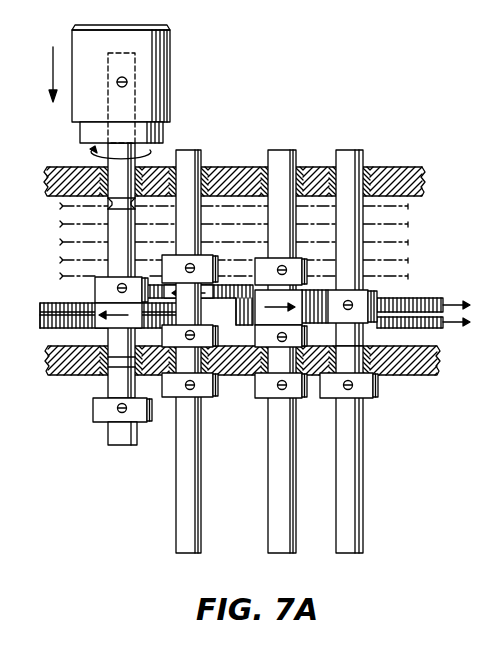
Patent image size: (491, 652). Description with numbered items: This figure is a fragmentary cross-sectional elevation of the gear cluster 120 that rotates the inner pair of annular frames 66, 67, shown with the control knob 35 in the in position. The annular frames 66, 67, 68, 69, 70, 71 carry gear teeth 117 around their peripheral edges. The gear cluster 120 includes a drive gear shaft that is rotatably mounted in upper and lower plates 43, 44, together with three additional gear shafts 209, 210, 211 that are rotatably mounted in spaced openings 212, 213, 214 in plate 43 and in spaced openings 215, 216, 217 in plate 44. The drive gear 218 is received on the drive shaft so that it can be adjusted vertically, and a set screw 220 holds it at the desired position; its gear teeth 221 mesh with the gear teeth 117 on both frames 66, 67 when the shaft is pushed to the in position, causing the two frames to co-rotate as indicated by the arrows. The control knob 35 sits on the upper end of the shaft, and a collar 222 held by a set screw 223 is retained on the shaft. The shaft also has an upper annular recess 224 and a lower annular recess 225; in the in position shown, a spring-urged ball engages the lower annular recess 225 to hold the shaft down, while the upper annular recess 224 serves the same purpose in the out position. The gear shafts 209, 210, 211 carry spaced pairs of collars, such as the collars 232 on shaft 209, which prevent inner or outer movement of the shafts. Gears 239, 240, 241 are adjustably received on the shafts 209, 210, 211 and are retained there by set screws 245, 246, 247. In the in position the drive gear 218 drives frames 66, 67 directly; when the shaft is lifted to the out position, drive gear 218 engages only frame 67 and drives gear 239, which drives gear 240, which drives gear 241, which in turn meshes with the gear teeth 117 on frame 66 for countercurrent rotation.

The gear cluster 120 is at (149, 92).
The control knob 35 is at (171, 103).
The upper annular recess 224 is at (112, 200).
The set screw 220 is at (120, 287).
The drive gear 218 is at (100, 290).
The gear teeth 117 is at (40, 322).
The gear teeth 221 is at (80, 330).
The lower annular recess 225 is at (83, 447).
The collar 222 is at (96, 418).
The set screw 223 is at (118, 418).
The collars 232 is at (168, 380).
The opening 215 is at (206, 397).
The opening 216 is at (288, 398).
The opening 217 is at (388, 429).
The gear shaft 209 is at (176, 532).
The gear shaft 210 is at (268, 533).
The gear shaft 211 is at (364, 530).
The opening 212 is at (199, 153).
The opening 213 is at (306, 167).
The opening 214 is at (354, 151).
The gear 239 is at (223, 284).
The gear 240 is at (322, 288).
The set screw 245 is at (190, 262).
The set screw 246 is at (280, 266).
The set screw 247 is at (355, 300).
The gear 241 is at (397, 376).
The plate 43 is at (379, 166).
The plate 44 is at (430, 374).
The annular frame 71 is at (412, 205).
The annular frame 70 is at (411, 222).
The annular frame 69 is at (409, 241).
The annular frame 68 is at (410, 259).
The annular frame 67 is at (447, 304).
The annular frame 66 is at (434, 328).